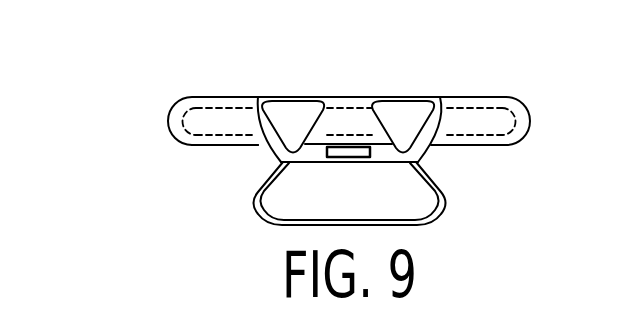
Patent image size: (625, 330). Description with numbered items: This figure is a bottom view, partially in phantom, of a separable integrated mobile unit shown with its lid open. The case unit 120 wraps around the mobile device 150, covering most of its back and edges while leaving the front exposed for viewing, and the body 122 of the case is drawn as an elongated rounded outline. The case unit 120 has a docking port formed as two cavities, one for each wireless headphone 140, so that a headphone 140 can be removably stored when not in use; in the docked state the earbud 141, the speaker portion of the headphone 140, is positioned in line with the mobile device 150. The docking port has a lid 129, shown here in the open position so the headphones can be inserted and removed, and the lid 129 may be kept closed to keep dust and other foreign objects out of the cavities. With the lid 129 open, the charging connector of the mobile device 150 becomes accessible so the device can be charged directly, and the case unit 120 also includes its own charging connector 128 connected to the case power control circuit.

The case unit 120 is at (167, 128).
The strap body 122 is at (208, 145).
The mobile device 150 is at (226, 99).
The wireless headphone 140 is at (428, 97).
The earbud 141 is at (397, 117).
The charging connector 128 is at (360, 163).
The lid 129 is at (430, 228).